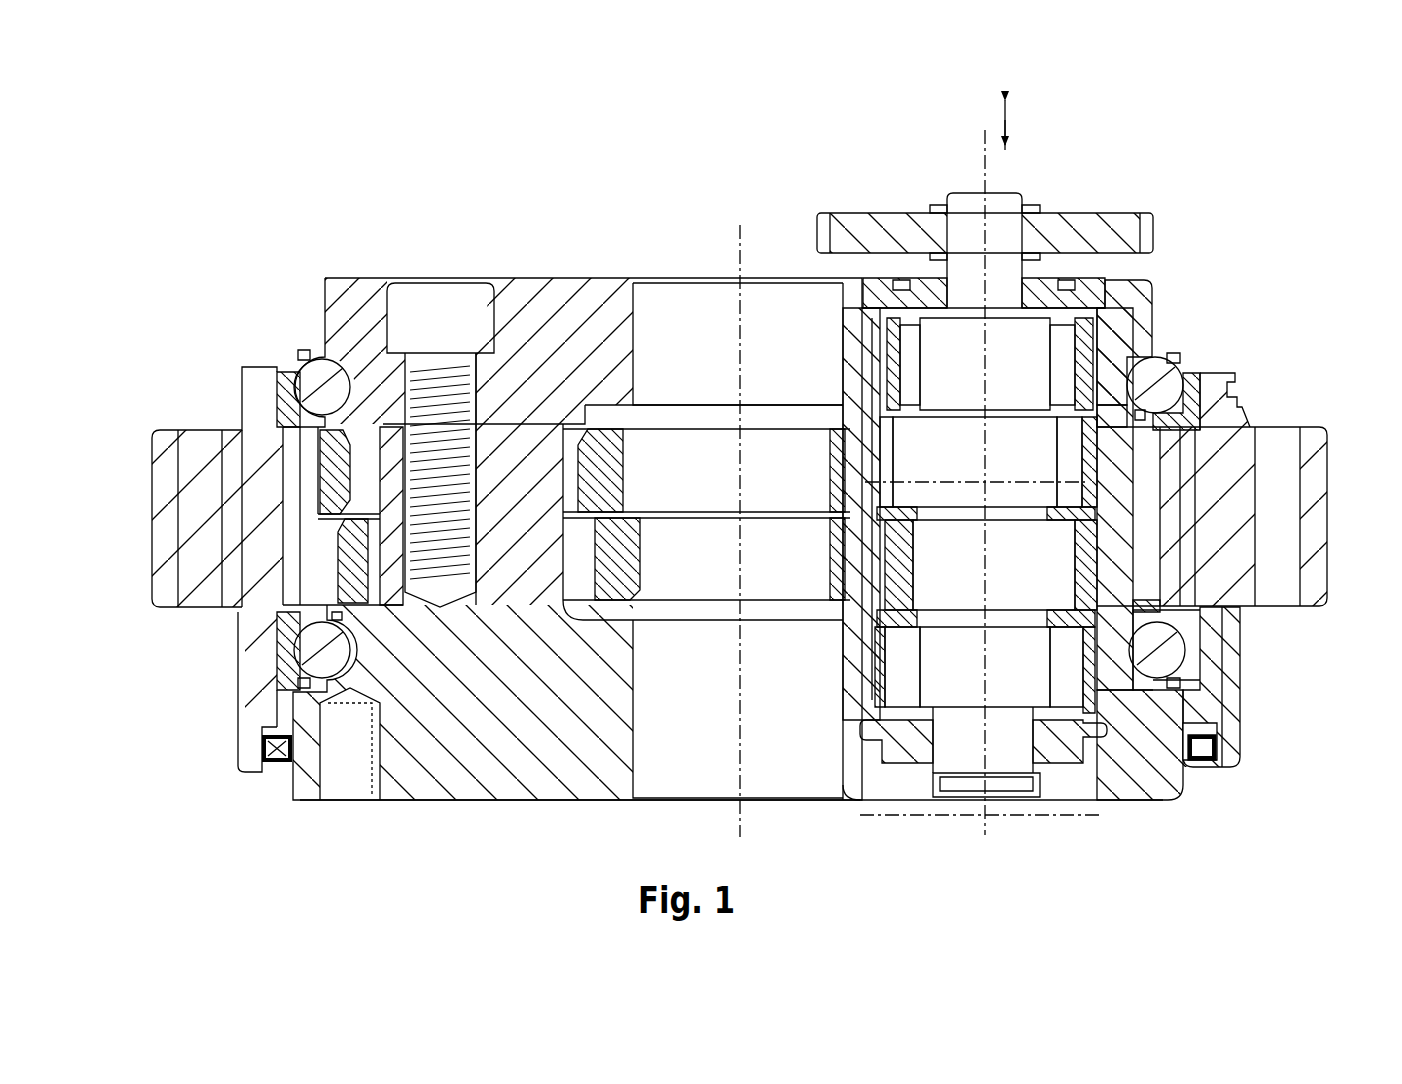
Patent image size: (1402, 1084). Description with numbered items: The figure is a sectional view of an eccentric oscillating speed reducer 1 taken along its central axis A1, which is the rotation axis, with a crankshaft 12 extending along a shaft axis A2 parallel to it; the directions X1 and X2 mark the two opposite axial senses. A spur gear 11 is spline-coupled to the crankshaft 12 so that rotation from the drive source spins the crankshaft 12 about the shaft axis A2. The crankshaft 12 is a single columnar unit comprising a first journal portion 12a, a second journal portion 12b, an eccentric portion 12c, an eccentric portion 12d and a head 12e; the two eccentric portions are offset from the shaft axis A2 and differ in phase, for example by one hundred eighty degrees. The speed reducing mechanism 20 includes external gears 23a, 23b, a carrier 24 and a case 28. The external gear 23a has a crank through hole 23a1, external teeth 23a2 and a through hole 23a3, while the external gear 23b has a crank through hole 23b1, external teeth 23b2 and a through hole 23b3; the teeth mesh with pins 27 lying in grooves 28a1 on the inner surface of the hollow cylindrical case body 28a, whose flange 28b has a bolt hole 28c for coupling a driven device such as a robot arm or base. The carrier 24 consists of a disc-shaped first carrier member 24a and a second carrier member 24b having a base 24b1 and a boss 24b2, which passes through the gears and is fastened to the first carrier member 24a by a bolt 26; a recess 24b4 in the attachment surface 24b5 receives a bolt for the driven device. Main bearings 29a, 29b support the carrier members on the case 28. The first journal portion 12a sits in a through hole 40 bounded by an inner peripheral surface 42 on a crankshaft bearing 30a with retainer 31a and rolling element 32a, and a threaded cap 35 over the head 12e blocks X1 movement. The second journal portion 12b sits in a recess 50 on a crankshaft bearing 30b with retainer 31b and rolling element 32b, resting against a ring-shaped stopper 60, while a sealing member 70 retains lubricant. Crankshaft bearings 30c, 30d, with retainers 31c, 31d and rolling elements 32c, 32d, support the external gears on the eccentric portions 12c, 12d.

The speed reducer 1 is at (192, 278).
The spur gear 11 is at (846, 240).
The crankshaft 12 is at (943, 718).
The first journal portion 12a is at (943, 340).
The second journal portion 12b is at (960, 700).
The eccentric portion 12c is at (1250, 458).
The eccentric portion 12d is at (1255, 538).
The head 12e is at (968, 215).
The speed reducing mechanism 20 is at (195, 700).
The external gear 23a is at (612, 462).
The crank through hole 23a1 is at (848, 460).
The external teeth 23a2 is at (350, 475).
The through hole 23a3 is at (292, 420).
The external gear 23b is at (622, 558).
The crank through hole 23b1 is at (865, 557).
The external teeth 23b2 is at (1102, 610).
The through hole 23b3 is at (285, 612).
The carrier 24 is at (276, 796).
The first carrier member 24a is at (540, 305).
The second carrier member 24b is at (440, 770).
The base 24b1 is at (555, 720).
The boss 24b2 is at (537, 440).
The recess 24b4 is at (330, 770).
The attachment surface 24b5 is at (480, 802).
The bolt 26 is at (435, 305).
The pin 27 is at (310, 540).
The case 28 is at (148, 445).
The case body 28a is at (256, 655).
The groove 28a1 is at (300, 555).
The flange 28b is at (168, 555).
The bolt hole 28c is at (182, 490).
The main bearing 29a is at (306, 348).
The main bearing 29b is at (292, 682).
The crankshaft bearing 30a is at (1083, 292).
The crankshaft bearing 30b is at (1074, 725).
The crankshaft bearing 30c is at (842, 412).
The crankshaft bearing 30d is at (860, 612).
The retainer 31a is at (1110, 335).
The retainer 31b is at (1180, 714).
The retainer 31c is at (1192, 380).
The retainer 31d is at (1202, 690).
The rolling element 32a is at (1072, 360).
The rolling element 32b is at (1205, 752).
The rolling element 32c is at (1137, 450).
The rolling element 32d is at (1168, 640).
The cap 35 is at (1102, 300).
The through hole 40 is at (1032, 274).
The inner peripheral surface 42 is at (878, 337).
The recess 50 is at (1022, 778).
The stopper 60 is at (882, 742).
The sealing member 70 is at (1005, 795).
The central axis A1 is at (736, 242).
The shaft axis A2 is at (980, 165).
The X1 direction X1 is at (1027, 110).
The X2 direction X2 is at (1027, 144).